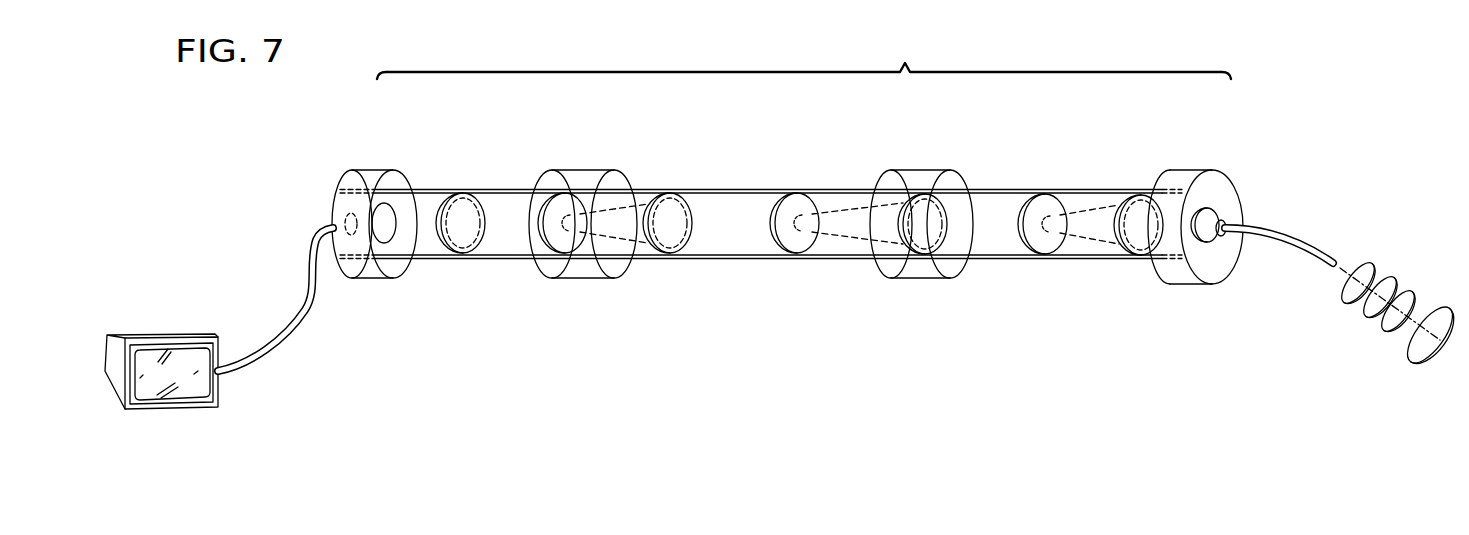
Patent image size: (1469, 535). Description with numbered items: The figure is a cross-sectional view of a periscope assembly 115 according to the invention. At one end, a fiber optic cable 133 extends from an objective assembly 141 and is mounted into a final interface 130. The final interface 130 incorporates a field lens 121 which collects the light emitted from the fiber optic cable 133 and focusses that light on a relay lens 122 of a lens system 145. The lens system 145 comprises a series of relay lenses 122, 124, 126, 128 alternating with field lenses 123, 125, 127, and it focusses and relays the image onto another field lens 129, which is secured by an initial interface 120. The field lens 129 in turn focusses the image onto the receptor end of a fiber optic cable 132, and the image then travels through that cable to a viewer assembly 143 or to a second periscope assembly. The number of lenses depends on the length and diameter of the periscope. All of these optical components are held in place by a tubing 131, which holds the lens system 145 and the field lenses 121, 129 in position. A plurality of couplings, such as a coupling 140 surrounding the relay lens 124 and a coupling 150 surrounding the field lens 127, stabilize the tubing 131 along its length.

The periscope assembly 115 is at (767, 307).
The lens system 145 is at (804, 56).
The initial interface 120 is at (362, 172).
The field lens 129 is at (390, 206).
The relay lens 128 is at (468, 194).
The field lens 127 is at (540, 182).
The coupling 150 is at (598, 172).
The relay lens 126 is at (688, 198).
The field lens 125 is at (788, 197).
The coupling 140 is at (907, 175).
The relay lens 124 is at (938, 198).
The field lens 123 is at (1042, 195).
The relay lens 122 is at (1134, 200).
The final interface 130 is at (1180, 223).
The field lens 121 is at (1213, 215).
The fiber optic cable 133 is at (1282, 237).
The objective assembly 141 is at (1386, 326).
The tubing 131 is at (1013, 258).
The viewer assembly 143 is at (170, 337).
The fiber optic cable 132 is at (318, 292).